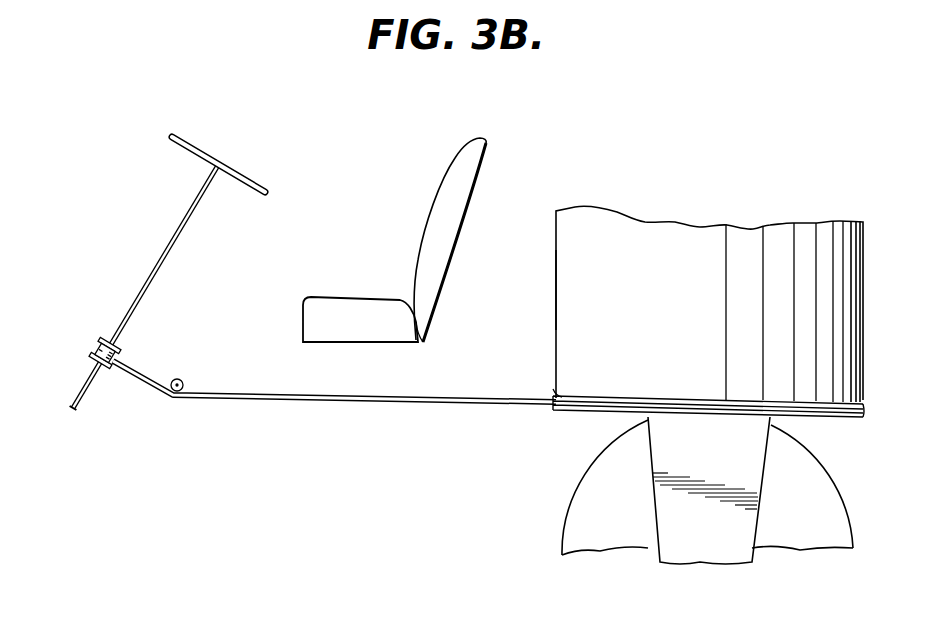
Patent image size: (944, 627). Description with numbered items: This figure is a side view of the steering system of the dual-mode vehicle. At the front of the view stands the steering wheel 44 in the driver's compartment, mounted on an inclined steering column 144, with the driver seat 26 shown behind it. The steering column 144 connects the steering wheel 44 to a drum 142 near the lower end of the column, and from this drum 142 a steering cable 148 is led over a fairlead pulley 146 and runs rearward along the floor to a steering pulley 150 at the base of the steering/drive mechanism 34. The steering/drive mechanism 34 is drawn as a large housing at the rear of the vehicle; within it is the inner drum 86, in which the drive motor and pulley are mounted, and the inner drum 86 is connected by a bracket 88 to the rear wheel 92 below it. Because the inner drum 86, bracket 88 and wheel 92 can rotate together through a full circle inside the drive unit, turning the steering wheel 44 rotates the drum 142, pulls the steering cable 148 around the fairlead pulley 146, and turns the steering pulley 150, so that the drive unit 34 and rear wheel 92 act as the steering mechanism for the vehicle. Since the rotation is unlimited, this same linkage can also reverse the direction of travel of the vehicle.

The driver seat 26 is at (411, 260).
The steering/drive mechanism 34 is at (648, 177).
The steering wheel 44 is at (252, 174).
The inner drum 86 is at (555, 290).
The bracket 88 is at (758, 457).
The wheel 92 is at (582, 484).
The drum 142 is at (87, 330).
The steering column 144 is at (178, 228).
The fairlead pulley 146 is at (192, 368).
The steering cable 148 is at (369, 389).
The steering pulley 150 is at (557, 394).